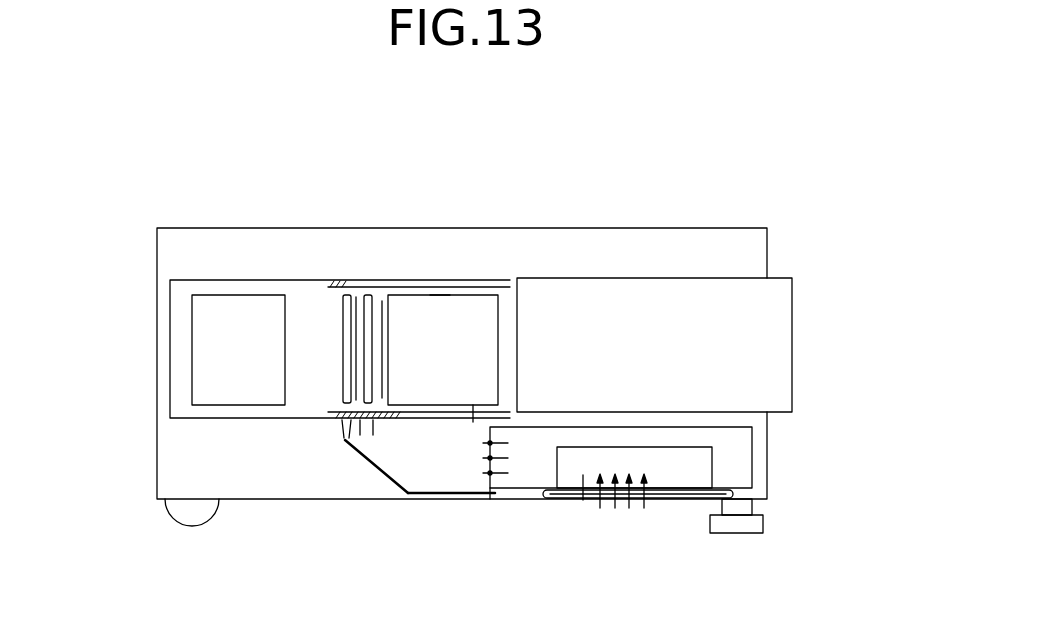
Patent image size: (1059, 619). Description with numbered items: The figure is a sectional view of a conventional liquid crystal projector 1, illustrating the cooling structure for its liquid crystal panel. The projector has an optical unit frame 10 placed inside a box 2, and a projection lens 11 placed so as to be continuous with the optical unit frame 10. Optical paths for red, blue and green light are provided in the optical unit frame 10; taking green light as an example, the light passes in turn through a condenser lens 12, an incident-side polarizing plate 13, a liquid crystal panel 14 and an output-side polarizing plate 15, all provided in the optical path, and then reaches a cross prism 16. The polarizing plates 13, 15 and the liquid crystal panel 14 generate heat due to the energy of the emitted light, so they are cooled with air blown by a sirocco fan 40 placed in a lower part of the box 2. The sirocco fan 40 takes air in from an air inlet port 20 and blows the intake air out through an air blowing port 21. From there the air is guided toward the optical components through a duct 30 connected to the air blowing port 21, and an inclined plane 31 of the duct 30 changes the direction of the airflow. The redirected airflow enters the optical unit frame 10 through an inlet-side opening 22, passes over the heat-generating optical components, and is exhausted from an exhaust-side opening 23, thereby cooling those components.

The liquid crystal projector 1 is at (546, 113).
The box 2 is at (723, 228).
The optical unit frame 10 is at (235, 280).
The projection lens 11 is at (653, 290).
The condenser lens 12 is at (342, 287).
The incident-side polarizing plate 13 is at (357, 283).
The exhaust-side opening 23 is at (370, 283).
The liquid crystal panel 14 is at (385, 298).
The output-side polarizing plate 15 is at (398, 302).
The cross prism 16 is at (441, 305).
The air inlet port 20 is at (565, 499).
The air blowing port 21 is at (508, 467).
The inlet-side opening 22 is at (343, 442).
The duct 30 is at (485, 507).
The inclined plane 31 is at (377, 466).
The sirocco fan 40 is at (585, 498).